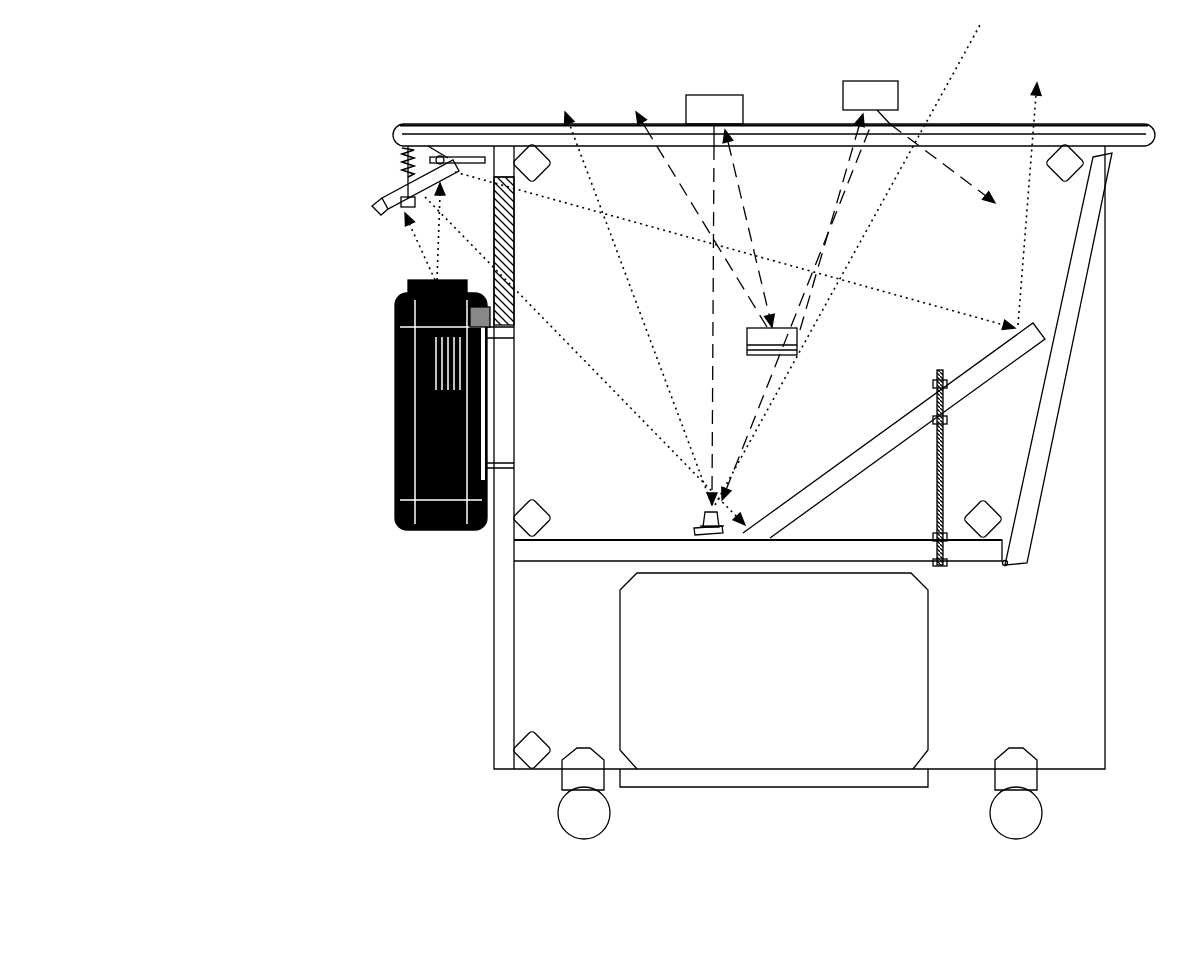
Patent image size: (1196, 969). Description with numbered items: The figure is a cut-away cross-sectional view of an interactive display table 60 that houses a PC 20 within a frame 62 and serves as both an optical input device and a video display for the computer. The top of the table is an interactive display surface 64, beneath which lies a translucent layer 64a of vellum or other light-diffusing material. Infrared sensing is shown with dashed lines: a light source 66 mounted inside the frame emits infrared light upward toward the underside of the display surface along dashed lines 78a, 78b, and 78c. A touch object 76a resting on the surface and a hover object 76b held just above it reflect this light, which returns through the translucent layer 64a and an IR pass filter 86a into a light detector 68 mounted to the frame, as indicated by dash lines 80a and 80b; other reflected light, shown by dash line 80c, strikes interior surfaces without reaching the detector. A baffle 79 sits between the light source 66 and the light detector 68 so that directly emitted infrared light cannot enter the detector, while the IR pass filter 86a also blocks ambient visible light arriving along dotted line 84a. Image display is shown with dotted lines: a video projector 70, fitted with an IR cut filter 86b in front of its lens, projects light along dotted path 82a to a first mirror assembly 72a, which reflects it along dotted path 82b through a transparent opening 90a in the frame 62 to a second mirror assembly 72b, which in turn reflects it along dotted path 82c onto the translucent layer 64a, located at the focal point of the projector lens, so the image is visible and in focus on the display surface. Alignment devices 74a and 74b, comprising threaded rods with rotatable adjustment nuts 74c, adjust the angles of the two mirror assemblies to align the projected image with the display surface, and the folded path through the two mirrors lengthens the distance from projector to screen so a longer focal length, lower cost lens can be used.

The PC 20 is at (928, 671).
The interactive display table 60 is at (393, 598).
The frame 62 is at (496, 660).
The interactive display surface 64 is at (525, 124).
The translucent layer 64a is at (955, 135).
The light source 66 is at (747, 340).
The light detector 68 is at (702, 525).
The video projector 70 is at (395, 372).
The first mirror assembly 72a is at (402, 213).
The second mirror assembly 72b is at (861, 447).
The alignment device 74a is at (471, 158).
The alignment device 74b is at (944, 445).
The rotatable adjustment nuts 74c is at (400, 203).
The touch object 76a is at (703, 95).
The hover object 76b is at (858, 81).
The dashed line 78a is at (683, 189).
The dashed line 78b is at (747, 237).
The dashed line 78c is at (839, 165).
The baffle 79 is at (760, 355).
The dash line 80a is at (712, 300).
The dash line 80b is at (800, 293).
The dash line 80c is at (952, 170).
The dotted path 82a is at (417, 253).
The dotted path 82b is at (633, 417).
The dotted path 82c is at (603, 221).
The dotted line 84a is at (974, 36).
The IR pass filter 86a is at (705, 502).
The IR cut filter 86b is at (408, 285).
The transparent opening 90a is at (514, 288).